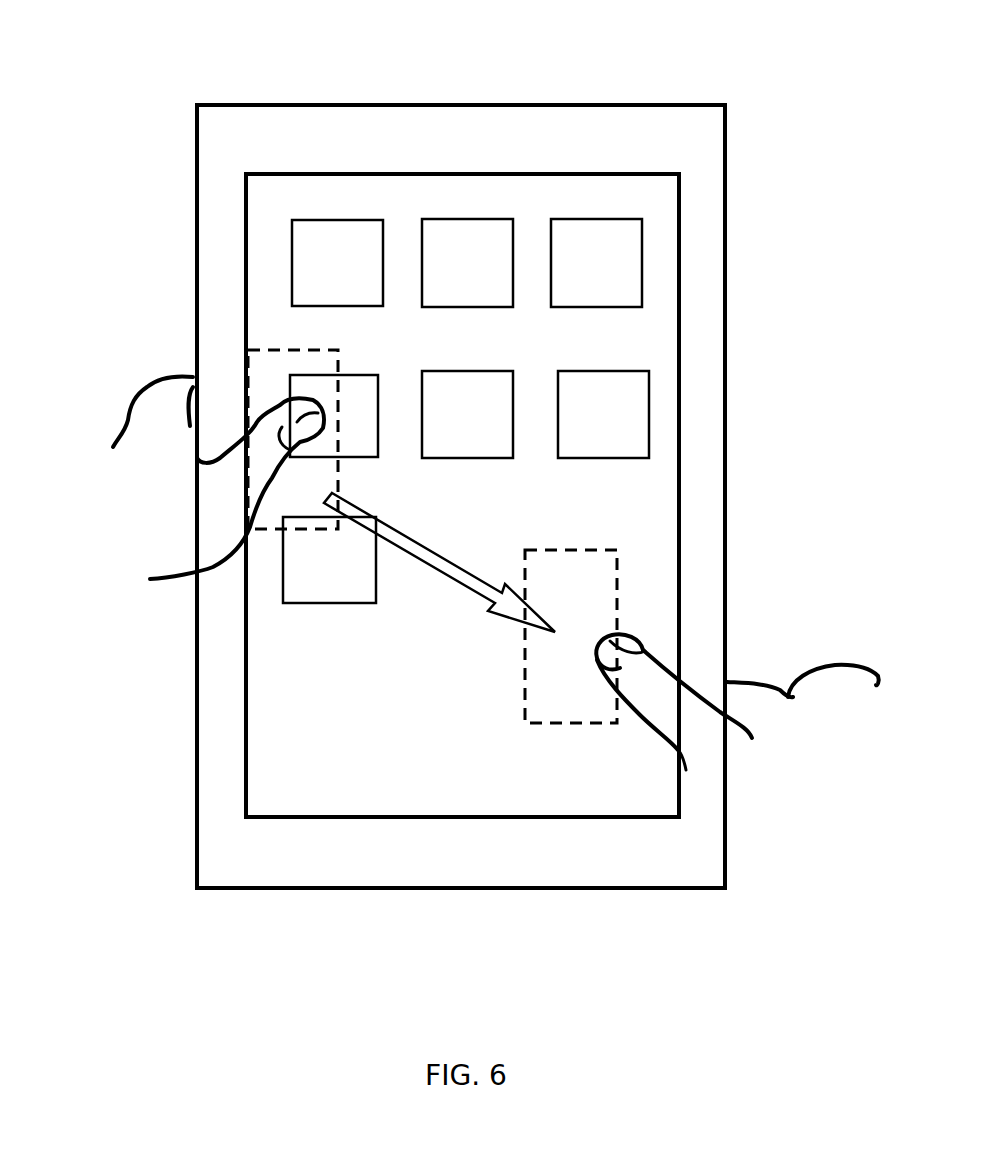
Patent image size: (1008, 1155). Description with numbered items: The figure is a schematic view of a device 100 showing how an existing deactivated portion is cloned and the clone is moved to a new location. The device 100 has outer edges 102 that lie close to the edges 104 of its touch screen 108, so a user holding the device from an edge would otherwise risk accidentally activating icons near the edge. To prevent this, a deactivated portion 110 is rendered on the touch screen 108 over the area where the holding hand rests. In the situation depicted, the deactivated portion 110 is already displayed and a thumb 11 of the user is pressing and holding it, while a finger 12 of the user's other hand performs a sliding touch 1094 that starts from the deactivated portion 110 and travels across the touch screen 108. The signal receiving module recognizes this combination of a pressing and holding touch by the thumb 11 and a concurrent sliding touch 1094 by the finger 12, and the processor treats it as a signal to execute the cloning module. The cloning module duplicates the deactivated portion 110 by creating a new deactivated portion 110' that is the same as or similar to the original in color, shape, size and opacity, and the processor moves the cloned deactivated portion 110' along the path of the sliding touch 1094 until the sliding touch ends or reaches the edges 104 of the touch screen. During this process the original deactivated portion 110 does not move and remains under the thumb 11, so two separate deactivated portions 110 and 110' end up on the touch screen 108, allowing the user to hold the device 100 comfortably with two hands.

The device 100 is at (455, 446).
The edges of the device 102 is at (726, 211).
The edges of the touch screen 104 is at (683, 358).
The touch screen 108 is at (610, 478).
The sliding touch 1094 is at (443, 558).
The thumb 11 is at (292, 432).
The finger 12 is at (612, 647).
The deactivated portion 110 is at (202, 507).
The cloned deactivated portion 110' is at (676, 716).